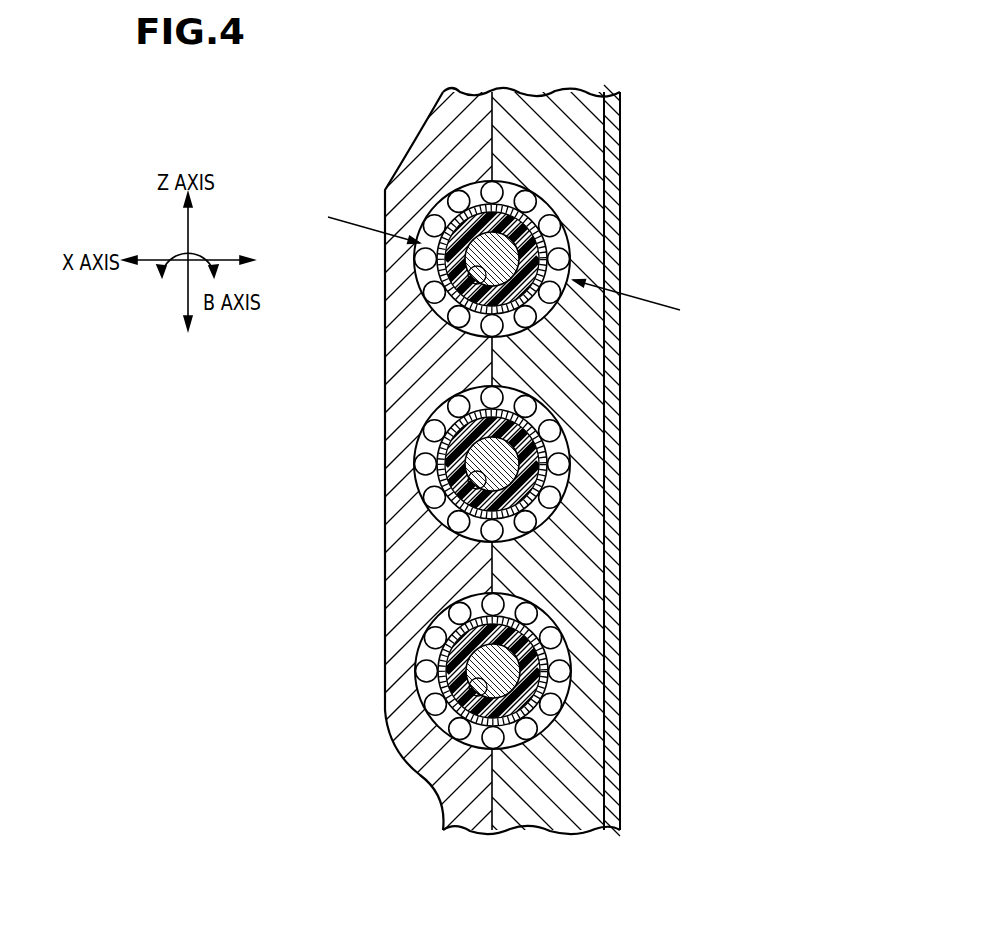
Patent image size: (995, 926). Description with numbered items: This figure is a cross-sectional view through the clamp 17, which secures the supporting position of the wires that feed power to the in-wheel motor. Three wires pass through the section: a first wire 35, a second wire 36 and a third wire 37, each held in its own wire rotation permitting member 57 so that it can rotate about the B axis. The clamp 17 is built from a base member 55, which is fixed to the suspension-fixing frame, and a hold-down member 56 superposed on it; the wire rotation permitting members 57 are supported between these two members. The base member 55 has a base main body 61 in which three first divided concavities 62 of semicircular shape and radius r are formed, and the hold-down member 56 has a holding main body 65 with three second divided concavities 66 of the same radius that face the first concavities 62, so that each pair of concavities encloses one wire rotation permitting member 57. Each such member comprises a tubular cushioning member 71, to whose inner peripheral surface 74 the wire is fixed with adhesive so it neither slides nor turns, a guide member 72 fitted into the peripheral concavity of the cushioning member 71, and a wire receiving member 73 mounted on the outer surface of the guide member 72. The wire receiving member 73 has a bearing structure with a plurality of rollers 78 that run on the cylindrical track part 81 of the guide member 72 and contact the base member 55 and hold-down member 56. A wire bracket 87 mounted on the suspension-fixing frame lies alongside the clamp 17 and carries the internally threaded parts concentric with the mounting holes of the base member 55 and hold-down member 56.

The clamp 17 is at (335, 177).
The first wire 35 is at (437, 263).
The second wire 36 is at (425, 465).
The third wire 37 is at (428, 655).
The base member 55 is at (550, 97).
The hold-down member 56 is at (470, 97).
The wire rotation permitting member 57 is at (437, 197).
The base main body 61 is at (577, 128).
The first divided concavity 62 is at (555, 250).
The holding main body 65 is at (447, 124).
The second divided concavity 66 is at (437, 303).
The tubular cushioning member 71 is at (556, 215).
The guide member 72 is at (560, 328).
The wire receiving member 73 is at (560, 266).
The inner peripheral surface 74 is at (430, 330).
The rollers 78 is at (545, 200).
The track part 81 is at (398, 757).
The wire bracket 87 is at (620, 117).